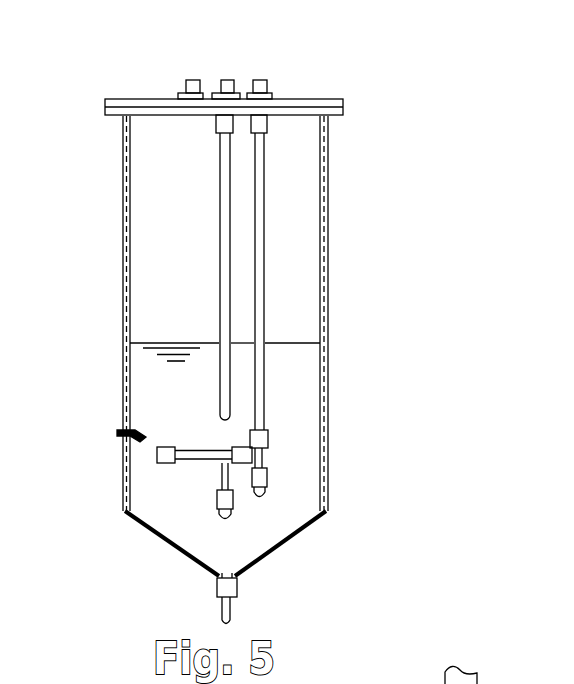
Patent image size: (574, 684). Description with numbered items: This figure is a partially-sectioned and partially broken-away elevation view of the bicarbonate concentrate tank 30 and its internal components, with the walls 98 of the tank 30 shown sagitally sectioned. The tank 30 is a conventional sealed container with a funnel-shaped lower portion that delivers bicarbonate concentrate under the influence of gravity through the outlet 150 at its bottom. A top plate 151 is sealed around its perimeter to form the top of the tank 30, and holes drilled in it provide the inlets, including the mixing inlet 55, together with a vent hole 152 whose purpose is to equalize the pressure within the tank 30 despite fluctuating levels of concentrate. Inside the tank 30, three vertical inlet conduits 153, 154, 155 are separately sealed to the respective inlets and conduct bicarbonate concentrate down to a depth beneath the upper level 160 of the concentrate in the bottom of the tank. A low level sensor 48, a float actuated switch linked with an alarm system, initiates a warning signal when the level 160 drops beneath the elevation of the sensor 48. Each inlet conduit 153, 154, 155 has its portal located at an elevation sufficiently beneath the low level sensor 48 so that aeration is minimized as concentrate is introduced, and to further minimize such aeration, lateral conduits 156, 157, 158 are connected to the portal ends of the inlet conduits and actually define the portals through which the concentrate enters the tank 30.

The bicarbonate concentrate tank 30 is at (114, 268).
The low level sensor 48 is at (127, 455).
The mixing inlet 55 is at (227, 80).
The walls 98 is at (327, 275).
The outlet 150 is at (227, 572).
The top plate 151 is at (300, 98).
The vent hole 152 is at (190, 80).
The vertical inlet conduit 153 is at (261, 467).
The vertical inlet conduit 154 is at (218, 226).
The vertical inlet conduit 155 is at (266, 234).
The lateral conduit 156 is at (268, 498).
The lateral conduit 157 is at (215, 522).
The lateral conduit 158 is at (198, 455).
The level 160 is at (187, 340).